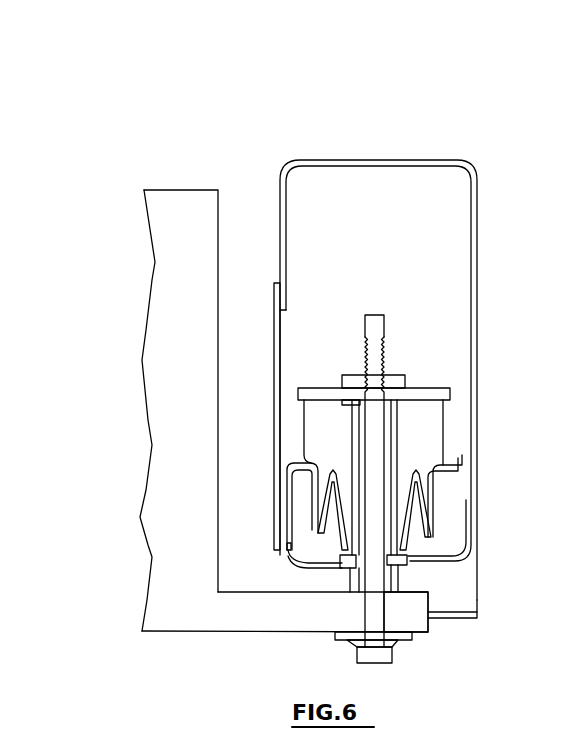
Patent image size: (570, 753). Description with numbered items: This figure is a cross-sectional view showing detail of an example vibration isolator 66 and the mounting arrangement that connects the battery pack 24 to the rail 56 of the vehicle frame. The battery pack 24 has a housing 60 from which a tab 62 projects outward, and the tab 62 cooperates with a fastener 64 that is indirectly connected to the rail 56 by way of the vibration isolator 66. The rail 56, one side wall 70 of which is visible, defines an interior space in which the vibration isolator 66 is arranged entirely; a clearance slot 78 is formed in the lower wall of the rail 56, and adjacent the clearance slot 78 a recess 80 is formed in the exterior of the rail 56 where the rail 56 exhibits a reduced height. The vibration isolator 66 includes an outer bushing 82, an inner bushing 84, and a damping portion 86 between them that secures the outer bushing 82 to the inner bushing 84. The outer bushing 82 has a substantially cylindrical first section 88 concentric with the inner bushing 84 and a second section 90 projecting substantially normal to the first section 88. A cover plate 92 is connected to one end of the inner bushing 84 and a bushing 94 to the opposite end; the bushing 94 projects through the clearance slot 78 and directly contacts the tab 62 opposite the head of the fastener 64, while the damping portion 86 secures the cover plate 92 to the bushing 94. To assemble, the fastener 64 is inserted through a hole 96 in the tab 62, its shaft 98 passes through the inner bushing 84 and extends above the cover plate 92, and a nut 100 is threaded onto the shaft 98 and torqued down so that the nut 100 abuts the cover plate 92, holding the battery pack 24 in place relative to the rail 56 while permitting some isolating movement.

The battery pack 24 is at (263, 430).
The rail 56 is at (398, 148).
The housing 60 is at (176, 580).
The tab 62 is at (296, 618).
The fastener 64 is at (370, 360).
The vibration isolator 66 is at (379, 471).
The side wall 70 is at (281, 264).
The clearance slot 78 is at (325, 577).
The recess 80 is at (470, 580).
The outer bushing 82 is at (466, 475).
The inner bushing 84 is at (395, 422).
The damping portion 86 is at (428, 438).
The first section 88 is at (432, 508).
The second section 90 is at (458, 450).
The cover plate 92 is at (330, 396).
The bushing 94 is at (398, 578).
The hole 96 is at (387, 612).
The shaft 98 is at (350, 450).
The nut 100 is at (350, 376).